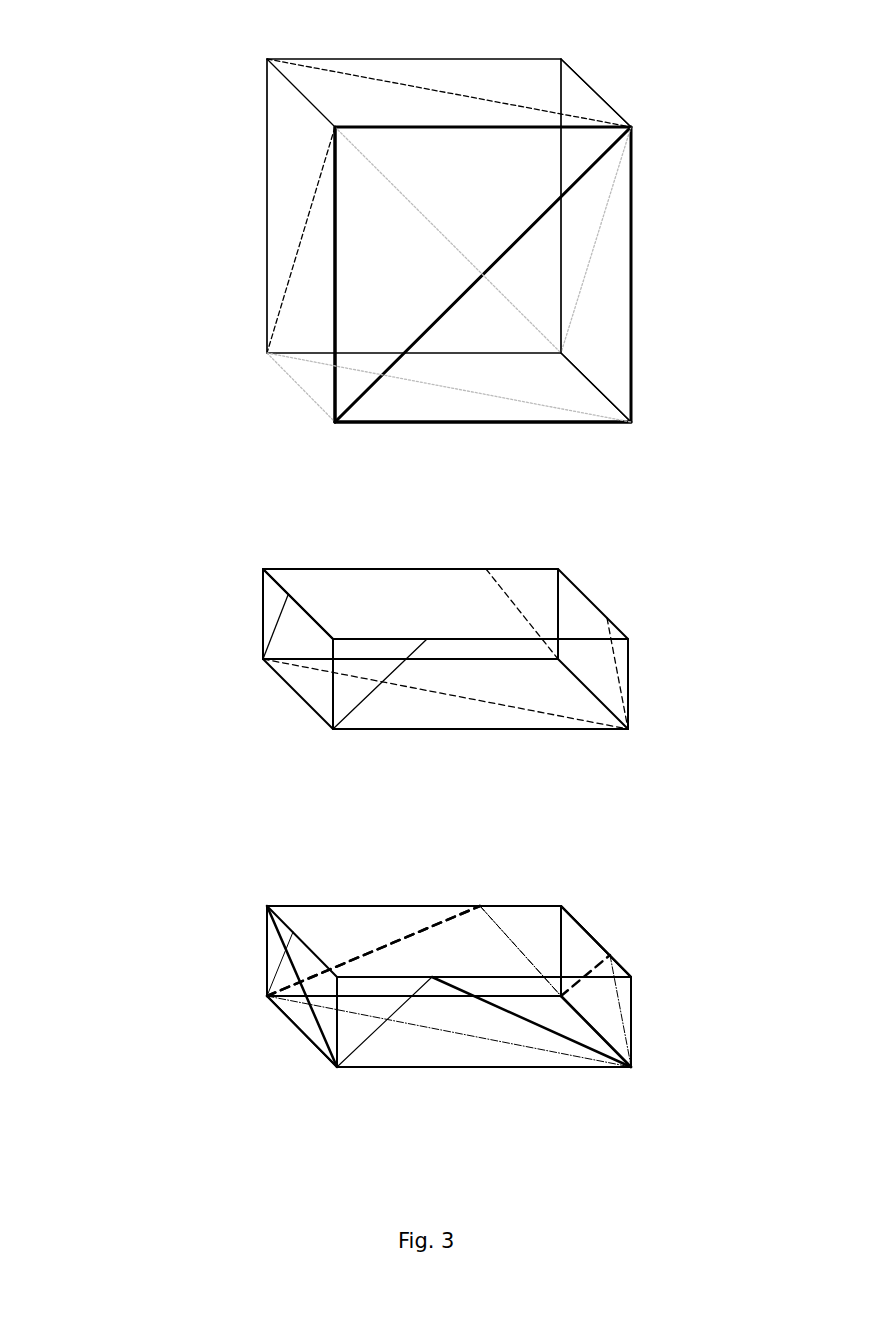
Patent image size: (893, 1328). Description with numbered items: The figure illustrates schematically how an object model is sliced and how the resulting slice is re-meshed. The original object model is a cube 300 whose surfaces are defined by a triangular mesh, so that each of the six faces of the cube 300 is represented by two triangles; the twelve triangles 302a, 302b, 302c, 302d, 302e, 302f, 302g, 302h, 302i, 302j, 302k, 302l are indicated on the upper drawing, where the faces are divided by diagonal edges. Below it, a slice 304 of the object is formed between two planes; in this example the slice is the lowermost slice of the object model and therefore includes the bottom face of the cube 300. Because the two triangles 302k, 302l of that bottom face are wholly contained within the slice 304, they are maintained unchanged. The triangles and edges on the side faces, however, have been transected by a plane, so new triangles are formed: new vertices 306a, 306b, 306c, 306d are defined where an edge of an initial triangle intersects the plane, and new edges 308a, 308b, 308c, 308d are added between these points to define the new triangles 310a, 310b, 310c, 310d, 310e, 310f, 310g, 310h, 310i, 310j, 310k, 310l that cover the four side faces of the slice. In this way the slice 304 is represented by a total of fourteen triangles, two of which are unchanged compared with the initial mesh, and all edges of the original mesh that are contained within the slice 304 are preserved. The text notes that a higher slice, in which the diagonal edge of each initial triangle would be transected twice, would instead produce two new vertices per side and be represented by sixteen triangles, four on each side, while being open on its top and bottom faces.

The cube 300 is at (158, 95).
The triangle 302a is at (280, 147).
The triangle 302b is at (305, 310).
The triangle 302c is at (340, 422).
The triangle 302d is at (607, 373).
The triangle 302e is at (585, 338).
The triangle 302f is at (607, 192).
The triangle 302g is at (268, 58).
The triangle 302h is at (313, 345).
The triangle 302i is at (341, 104).
The triangle 302j is at (518, 72).
The triangle 302k is at (467, 407).
The triangle 302l is at (572, 390).
The slice 304 is at (188, 540).
The new vertex 306a is at (265, 592).
The new vertex 306b is at (428, 640).
The new vertex 306c is at (605, 615).
The new vertex 306d is at (483, 570).
The new edge 308a is at (569, 1023).
The new edge 308b is at (330, 968).
The new edge 308c is at (399, 942).
The new edge 308d is at (598, 963).
The new triangle 310a is at (272, 947).
The new triangle 310b is at (299, 1014).
The new triangle 310c is at (329, 1021).
The new triangle 310d is at (350, 1037).
The new triangle 310e is at (453, 1045).
The new triangle 310f is at (588, 1063).
The new triangle 310g is at (633, 1013).
The new triangle 310h is at (593, 970).
The new triangle 310i is at (568, 935).
The new triangle 310j is at (537, 923).
The new triangle 310k is at (475, 930).
The new triangle 310l is at (330, 923).